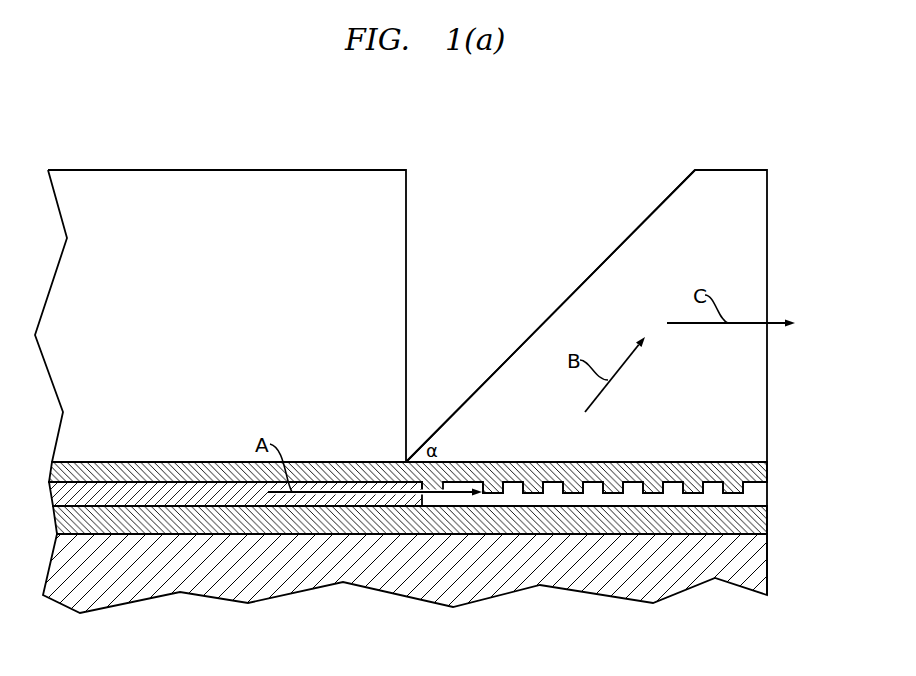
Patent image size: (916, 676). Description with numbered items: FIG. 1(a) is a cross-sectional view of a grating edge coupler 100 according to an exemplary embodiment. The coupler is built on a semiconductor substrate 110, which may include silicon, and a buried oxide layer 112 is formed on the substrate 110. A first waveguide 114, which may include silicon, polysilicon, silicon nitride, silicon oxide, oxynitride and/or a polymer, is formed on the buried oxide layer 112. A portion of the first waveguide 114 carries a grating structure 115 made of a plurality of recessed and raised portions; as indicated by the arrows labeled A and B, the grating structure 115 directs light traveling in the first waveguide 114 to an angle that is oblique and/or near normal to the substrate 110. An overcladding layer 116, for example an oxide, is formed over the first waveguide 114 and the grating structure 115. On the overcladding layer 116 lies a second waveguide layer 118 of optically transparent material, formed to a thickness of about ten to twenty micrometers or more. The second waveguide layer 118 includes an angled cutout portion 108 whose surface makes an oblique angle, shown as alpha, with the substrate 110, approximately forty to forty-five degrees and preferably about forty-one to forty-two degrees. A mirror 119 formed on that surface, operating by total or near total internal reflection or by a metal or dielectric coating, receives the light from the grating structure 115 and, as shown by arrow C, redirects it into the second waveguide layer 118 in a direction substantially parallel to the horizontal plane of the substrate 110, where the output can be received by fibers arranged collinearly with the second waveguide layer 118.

The grating edge coupler 100 is at (818, 152).
The angled cutout portion 108 is at (477, 222).
The semiconductor substrate 110 is at (688, 590).
The buried oxide (BOX) layer 112 is at (762, 520).
The first waveguide 114 is at (758, 490).
The grating structure 115 is at (663, 482).
The overcladding layer 116 is at (767, 465).
The second waveguide layer 118 is at (245, 170).
The mirror 119 is at (600, 262).